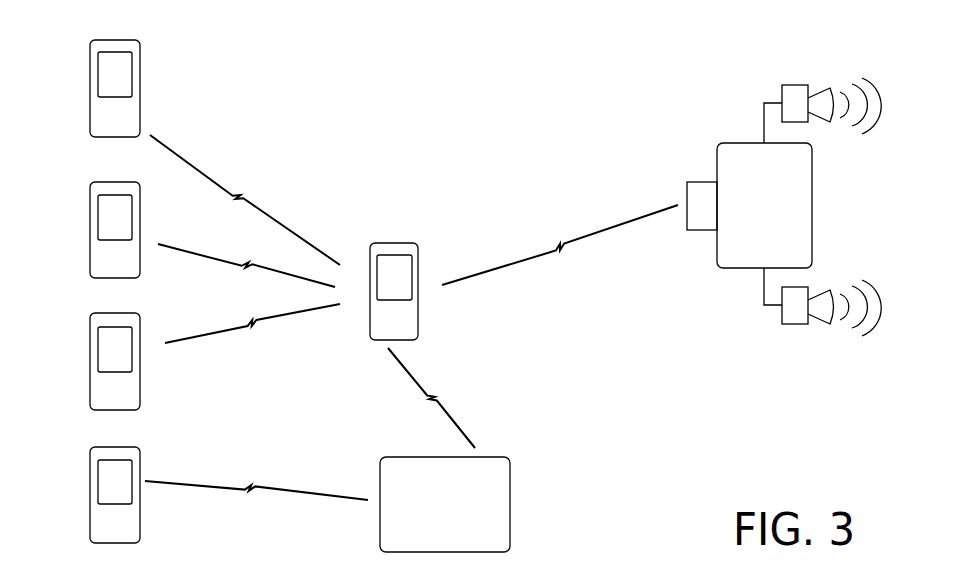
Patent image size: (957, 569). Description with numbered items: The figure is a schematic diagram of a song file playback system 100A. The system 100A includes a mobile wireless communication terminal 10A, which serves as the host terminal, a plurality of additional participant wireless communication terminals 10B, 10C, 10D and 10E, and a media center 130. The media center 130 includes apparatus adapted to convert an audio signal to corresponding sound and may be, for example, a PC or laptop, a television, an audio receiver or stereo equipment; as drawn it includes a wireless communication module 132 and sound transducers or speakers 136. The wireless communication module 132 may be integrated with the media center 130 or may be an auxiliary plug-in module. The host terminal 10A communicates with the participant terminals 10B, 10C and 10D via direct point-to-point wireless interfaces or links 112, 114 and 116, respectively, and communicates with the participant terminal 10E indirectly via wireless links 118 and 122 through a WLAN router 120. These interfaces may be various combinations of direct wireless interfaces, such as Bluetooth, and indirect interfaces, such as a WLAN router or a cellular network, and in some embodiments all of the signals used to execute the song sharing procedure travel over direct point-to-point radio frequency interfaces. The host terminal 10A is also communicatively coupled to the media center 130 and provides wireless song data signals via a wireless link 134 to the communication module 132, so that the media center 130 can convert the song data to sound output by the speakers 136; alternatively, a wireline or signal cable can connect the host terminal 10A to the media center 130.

The song file playback system 100A is at (508, 70).
The mobile wireless communication terminal 10A is at (376, 242).
The participant wireless communication terminal 10B is at (97, 38).
The participant wireless communication terminal 10C is at (97, 180).
The participant wireless communication terminal 10D is at (97, 312).
The participant wireless communication terminal 10E is at (97, 446).
The wireless link 112 is at (243, 191).
The wireless link 114 is at (264, 267).
The wireless link 116 is at (245, 321).
The wireless link 118 is at (284, 489).
The WLAN router 120 is at (469, 518).
The wireless link 122 is at (433, 392).
The media center 130 is at (786, 214).
The wireless communication module 132 is at (701, 181).
The wireless link 134 is at (575, 232).
The sound transducers 136 is at (779, 84).